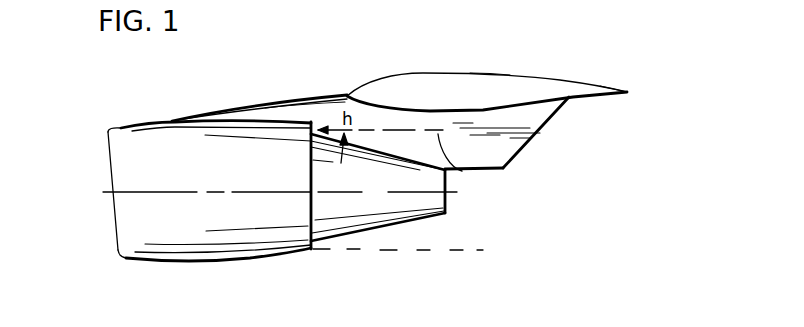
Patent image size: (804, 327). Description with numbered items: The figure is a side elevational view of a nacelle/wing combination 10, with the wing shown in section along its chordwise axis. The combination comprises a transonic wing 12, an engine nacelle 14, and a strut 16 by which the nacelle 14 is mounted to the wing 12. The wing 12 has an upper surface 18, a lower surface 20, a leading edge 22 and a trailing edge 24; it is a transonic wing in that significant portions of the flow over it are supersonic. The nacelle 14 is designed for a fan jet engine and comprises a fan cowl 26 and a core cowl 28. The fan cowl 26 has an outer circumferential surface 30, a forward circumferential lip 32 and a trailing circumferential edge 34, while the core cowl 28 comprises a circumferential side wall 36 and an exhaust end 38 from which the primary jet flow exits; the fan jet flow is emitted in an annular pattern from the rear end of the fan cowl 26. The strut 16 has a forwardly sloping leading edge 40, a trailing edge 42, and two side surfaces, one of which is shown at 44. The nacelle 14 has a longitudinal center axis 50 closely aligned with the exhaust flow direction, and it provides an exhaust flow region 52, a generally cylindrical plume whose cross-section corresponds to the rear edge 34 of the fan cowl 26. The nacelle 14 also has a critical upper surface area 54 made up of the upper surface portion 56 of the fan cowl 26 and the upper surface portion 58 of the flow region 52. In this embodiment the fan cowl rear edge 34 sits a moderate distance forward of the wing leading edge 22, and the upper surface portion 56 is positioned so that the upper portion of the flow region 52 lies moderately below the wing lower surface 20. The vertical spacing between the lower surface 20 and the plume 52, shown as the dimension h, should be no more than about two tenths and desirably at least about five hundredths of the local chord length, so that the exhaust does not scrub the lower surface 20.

The nacelle/wing combination 10 is at (560, 34).
The transonic wing 12 is at (557, 78).
The engine nacelle 14 is at (174, 259).
The strut 16 is at (527, 149).
The upper surface 18 is at (500, 75).
The lower surface 20 is at (520, 139).
The leading edge 22 is at (350, 97).
The trailing edge 24 is at (628, 92).
The fan cowl 26 is at (150, 127).
The core cowl 28 is at (359, 232).
The outer circumferential surface 30 is at (214, 178).
The forward circumferential lip 32 is at (108, 130).
The trailing circumferential edge 34 is at (312, 127).
The circumferential side wall 36 is at (377, 188).
The exhaust end 38 is at (447, 215).
The forwardly sloping leading edge 40 is at (275, 95).
The trailing edge 42 is at (557, 116).
The side surface 44 is at (473, 153).
The longitudinal center axis 50 is at (143, 192).
The exhaust flow region 52 is at (462, 171).
The critical upper surface area 54 is at (248, 118).
The upper surface portion of the fan cowl 56 is at (217, 113).
The upper surface portion of the flow region 58 is at (387, 130).